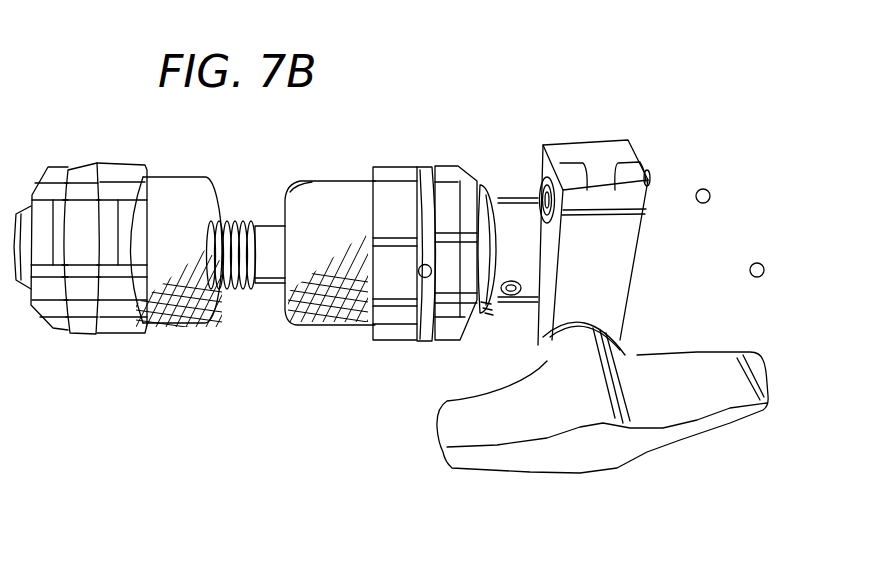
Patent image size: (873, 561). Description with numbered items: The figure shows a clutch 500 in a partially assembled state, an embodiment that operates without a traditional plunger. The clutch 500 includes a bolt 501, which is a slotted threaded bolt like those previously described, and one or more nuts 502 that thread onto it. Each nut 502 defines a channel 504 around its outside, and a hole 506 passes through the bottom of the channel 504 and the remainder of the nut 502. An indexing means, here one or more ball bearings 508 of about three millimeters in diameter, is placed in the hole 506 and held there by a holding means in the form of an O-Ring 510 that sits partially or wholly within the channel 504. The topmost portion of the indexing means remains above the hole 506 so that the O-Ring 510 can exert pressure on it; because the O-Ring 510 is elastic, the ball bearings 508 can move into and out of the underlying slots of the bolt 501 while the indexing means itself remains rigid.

The clutch 500 is at (661, 92).
The bolt 501 is at (272, 232).
The nut 502 is at (126, 338).
The channel 504 is at (422, 180).
The hole 506 is at (431, 268).
The ball bearings 508 is at (762, 264).
The O-Ring 510 is at (83, 188).